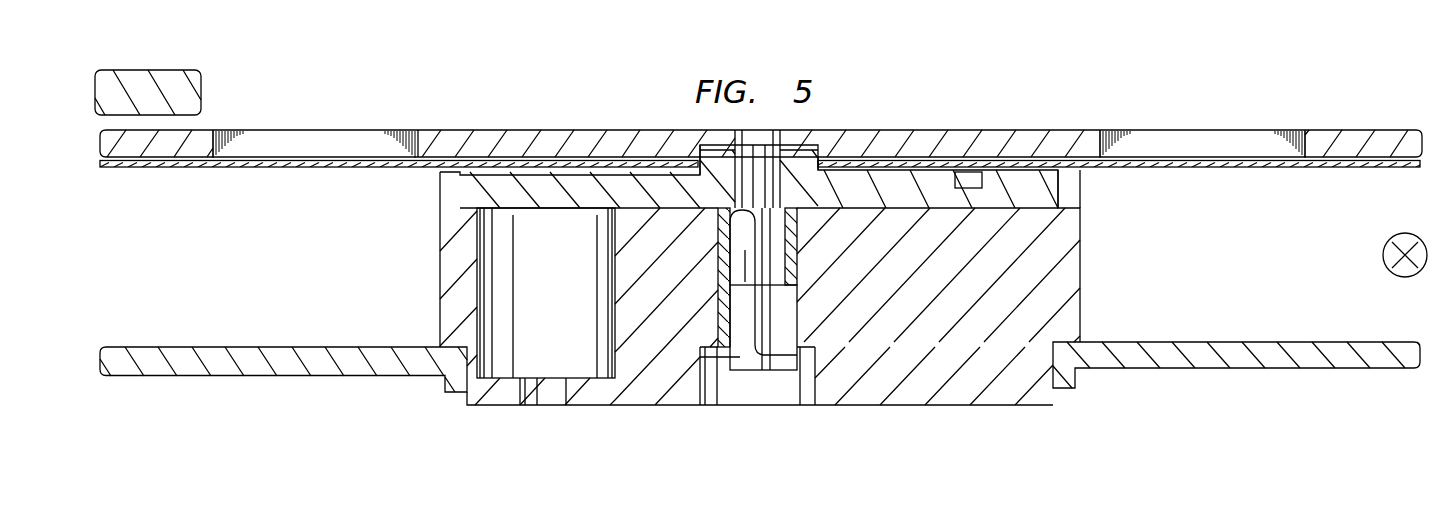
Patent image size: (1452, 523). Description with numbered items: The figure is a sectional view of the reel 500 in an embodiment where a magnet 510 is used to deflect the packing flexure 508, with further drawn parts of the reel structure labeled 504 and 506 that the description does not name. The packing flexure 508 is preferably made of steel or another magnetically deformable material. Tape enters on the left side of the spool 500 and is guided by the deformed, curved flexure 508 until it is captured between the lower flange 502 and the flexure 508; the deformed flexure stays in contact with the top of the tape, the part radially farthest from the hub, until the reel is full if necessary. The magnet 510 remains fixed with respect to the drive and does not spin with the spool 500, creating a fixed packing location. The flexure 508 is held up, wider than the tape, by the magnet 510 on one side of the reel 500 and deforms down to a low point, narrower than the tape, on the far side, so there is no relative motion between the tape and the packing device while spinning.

The reel 500 is at (612, 114).
The lower flange 502 is at (158, 372).
The upper cover plate 504 is at (957, 128).
The housing / hub assembly 506 is at (1078, 274).
The packing flexure 508 is at (1227, 168).
The magnet 510 is at (132, 75).